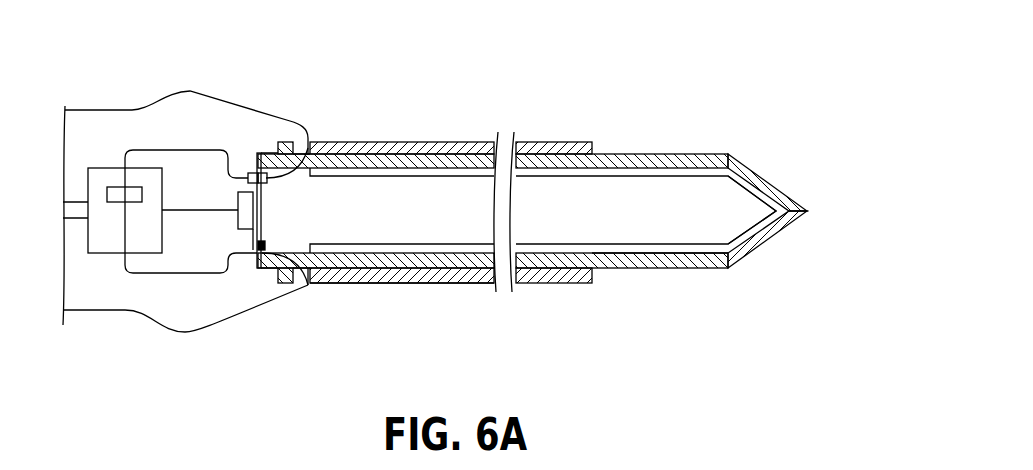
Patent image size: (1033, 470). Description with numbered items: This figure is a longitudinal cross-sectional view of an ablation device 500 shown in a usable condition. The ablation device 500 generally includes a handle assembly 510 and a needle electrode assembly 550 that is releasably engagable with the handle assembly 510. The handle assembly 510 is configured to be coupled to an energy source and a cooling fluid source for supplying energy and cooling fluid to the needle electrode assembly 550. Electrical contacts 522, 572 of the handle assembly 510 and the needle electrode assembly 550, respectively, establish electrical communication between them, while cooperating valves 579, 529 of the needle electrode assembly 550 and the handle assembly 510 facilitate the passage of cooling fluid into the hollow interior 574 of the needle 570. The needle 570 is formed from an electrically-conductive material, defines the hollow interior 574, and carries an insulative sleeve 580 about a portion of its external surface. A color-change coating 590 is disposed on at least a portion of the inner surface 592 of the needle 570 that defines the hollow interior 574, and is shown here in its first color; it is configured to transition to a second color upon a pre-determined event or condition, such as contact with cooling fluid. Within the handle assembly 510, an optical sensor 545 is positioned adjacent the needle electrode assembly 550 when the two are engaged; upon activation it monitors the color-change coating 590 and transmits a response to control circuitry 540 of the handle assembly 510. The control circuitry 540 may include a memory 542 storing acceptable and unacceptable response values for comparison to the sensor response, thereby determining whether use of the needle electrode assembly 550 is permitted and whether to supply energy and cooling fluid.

The ablation device 500 is at (618, 75).
The handle assembly 510 is at (92, 109).
The electrical contact 522 is at (252, 173).
The valve 529 is at (253, 250).
The control circuitry 540 is at (108, 240).
The memory 542 is at (137, 187).
The optical sensor 545 is at (247, 217).
The needle electrode assembly 550 is at (452, 137).
The needle 570 is at (661, 155).
The electrical contact 572 is at (312, 142).
The hollow interior 574 is at (738, 198).
The valve 579 is at (308, 285).
The insulative sleeve 580 is at (392, 283).
The color-change coating 590 is at (692, 245).
The inner surface 592 is at (605, 253).